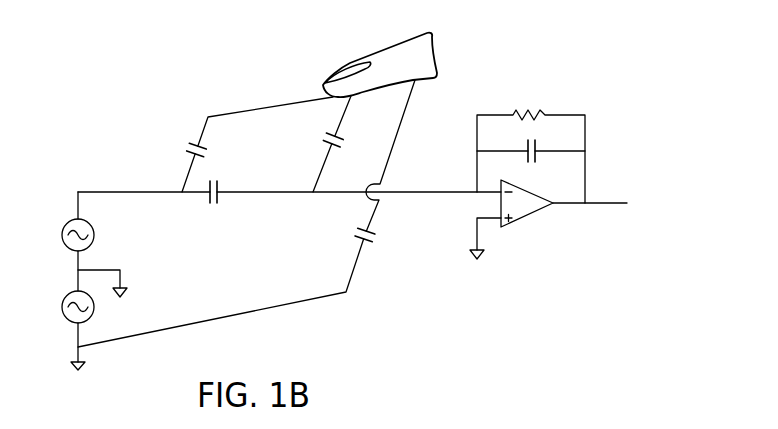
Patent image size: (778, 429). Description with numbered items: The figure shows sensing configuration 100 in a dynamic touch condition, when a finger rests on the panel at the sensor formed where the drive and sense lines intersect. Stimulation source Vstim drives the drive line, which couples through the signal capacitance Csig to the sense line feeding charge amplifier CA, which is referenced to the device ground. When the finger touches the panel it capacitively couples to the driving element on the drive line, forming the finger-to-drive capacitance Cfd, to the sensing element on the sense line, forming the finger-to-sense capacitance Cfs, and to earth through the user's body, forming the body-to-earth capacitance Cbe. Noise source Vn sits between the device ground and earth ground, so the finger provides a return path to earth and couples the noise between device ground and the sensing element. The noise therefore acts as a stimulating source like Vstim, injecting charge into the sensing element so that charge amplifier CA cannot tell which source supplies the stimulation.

The sensing configuration 100 is at (322, 205).
The signal capacitance Csig is at (219, 204).
The finger-to-drive capacitance Cfd is at (257, 144).
The finger-to-sense capacitance Cfs is at (343, 144).
The body-to-earth capacitance Cbe is at (246, 213).
The stimulation source Vstim is at (56, 235).
The noise source Vn is at (64, 307).
The charge amplifier CA is at (541, 187).